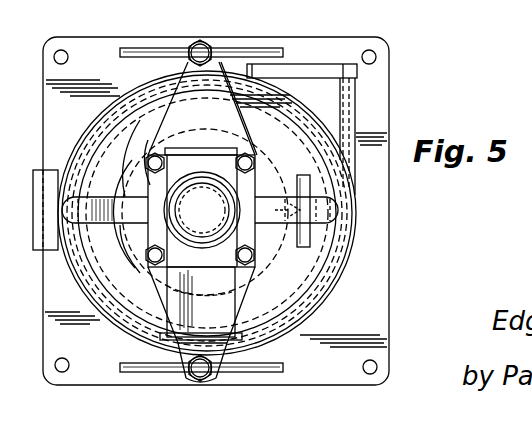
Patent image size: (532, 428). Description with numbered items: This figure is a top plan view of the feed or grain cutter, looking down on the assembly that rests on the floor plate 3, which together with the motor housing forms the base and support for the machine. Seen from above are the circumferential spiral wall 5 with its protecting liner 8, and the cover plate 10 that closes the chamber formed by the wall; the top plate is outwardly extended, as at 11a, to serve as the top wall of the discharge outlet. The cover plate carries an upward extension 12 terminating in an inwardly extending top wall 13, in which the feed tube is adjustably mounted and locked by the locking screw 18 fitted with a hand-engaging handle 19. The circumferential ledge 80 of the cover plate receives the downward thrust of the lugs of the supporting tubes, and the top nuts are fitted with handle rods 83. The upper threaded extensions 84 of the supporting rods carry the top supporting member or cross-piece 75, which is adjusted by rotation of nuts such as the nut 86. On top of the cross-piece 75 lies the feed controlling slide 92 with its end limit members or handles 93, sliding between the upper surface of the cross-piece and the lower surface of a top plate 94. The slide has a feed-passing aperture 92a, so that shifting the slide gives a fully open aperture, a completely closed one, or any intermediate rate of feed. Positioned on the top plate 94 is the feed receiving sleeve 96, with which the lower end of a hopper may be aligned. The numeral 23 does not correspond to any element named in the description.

The floor plate 3 is at (392, 57).
The circumferential spiral wall 5 is at (273, 346).
The liner 8 is at (342, 118).
The cover plate 10 is at (319, 289).
The outward extension of the top plate 11a is at (327, 103).
The upward extension 12 is at (133, 258).
The top wall 13 is at (132, 230).
The locking screw 18 is at (300, 225).
The hand-engaging handle 19 is at (303, 168).
The left arm 23 is at (98, 200).
The top supporting member 75 is at (240, 124).
The circumferential ledge 80 is at (73, 271).
The handle rods 83 is at (238, 50).
The upper extensions of the bolts or rods 84 is at (192, 45).
The nut 86 is at (200, 41).
The feed controlling slide 92 is at (222, 292).
The feed-passing aperture 92a is at (201, 185).
The end limit members or handles 93 is at (237, 135).
The top plate 94 is at (250, 190).
The feed receiving sleeve 96 is at (150, 185).